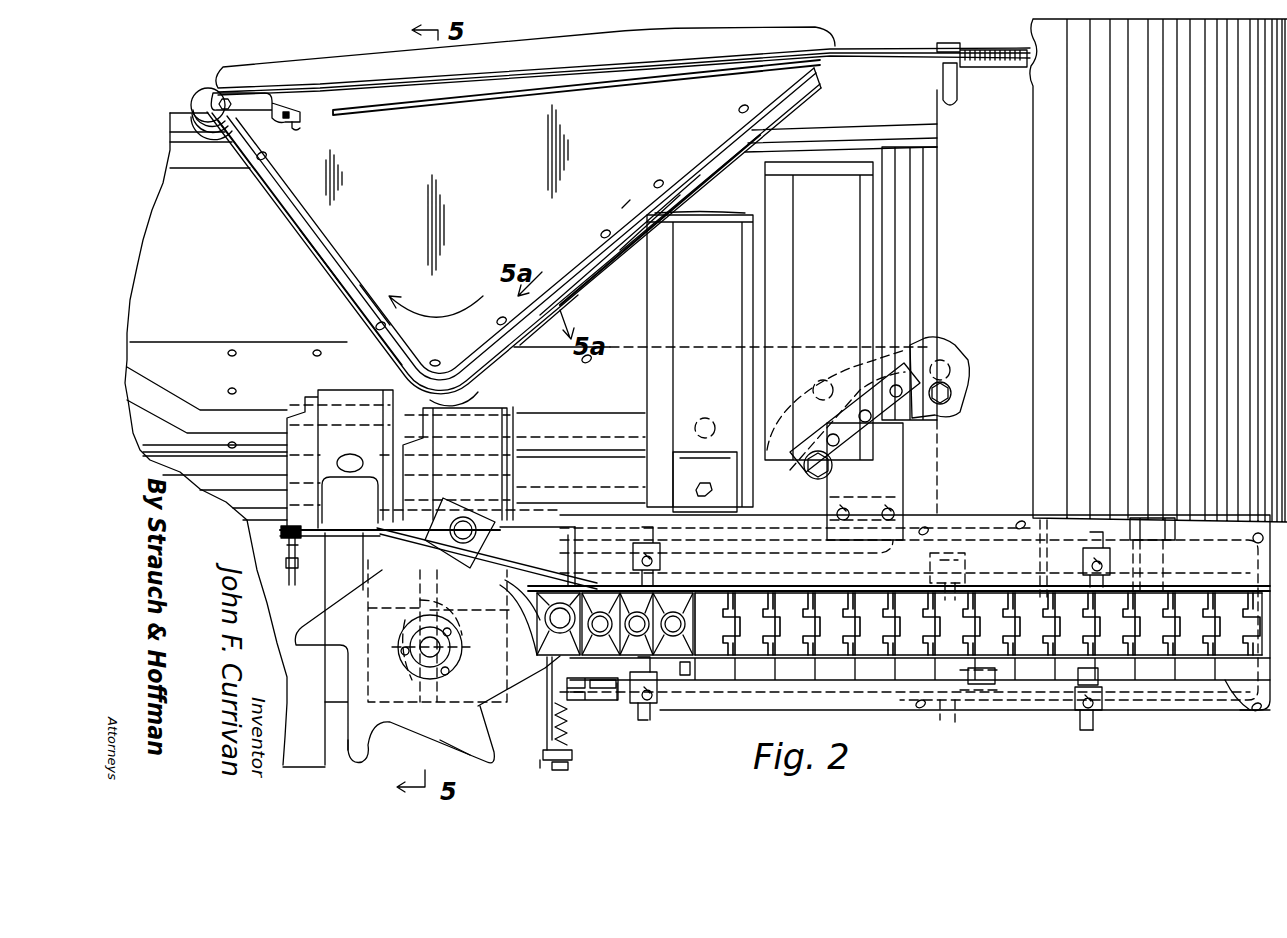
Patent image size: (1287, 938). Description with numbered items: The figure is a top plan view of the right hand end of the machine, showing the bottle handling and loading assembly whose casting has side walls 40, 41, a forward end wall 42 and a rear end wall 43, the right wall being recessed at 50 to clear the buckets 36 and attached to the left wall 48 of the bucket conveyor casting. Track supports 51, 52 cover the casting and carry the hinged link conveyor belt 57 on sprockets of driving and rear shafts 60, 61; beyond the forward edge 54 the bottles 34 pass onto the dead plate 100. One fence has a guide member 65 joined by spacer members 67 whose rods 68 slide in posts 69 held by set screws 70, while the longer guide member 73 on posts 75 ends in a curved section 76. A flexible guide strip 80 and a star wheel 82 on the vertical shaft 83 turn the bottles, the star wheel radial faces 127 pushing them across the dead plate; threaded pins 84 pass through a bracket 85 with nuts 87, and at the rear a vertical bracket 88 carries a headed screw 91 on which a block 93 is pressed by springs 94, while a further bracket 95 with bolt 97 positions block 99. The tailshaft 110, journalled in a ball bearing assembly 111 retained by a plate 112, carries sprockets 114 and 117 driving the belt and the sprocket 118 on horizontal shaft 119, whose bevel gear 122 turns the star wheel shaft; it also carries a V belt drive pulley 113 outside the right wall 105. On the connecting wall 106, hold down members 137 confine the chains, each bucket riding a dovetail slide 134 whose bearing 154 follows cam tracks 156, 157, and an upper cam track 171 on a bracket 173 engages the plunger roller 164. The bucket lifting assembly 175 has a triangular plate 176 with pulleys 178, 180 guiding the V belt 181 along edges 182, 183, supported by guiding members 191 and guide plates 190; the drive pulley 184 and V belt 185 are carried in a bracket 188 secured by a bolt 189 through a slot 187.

The bottles 34 is at (577, 558).
The buckets 36 is at (332, 392).
The left side wall 40 is at (1012, 710).
The right side wall 41 is at (1010, 520).
The forward end wall 42 is at (375, 615).
The rear end wall 43 is at (1262, 615).
The left wall 48 is at (276, 490).
The recess 50 is at (745, 572).
The conveyor track support 51 is at (1222, 712).
The conveyor track support 52 is at (1203, 572).
The forward edge 54 is at (512, 515).
The hinged link conveyor belt 57 is at (1040, 600).
The driving shaft 60 is at (498, 618).
The rear shaft 61 is at (1160, 553).
The guide member 65 is at (1247, 708).
The spacer members 67 is at (655, 665).
The rod 68 is at (641, 722).
The post 69 is at (652, 710).
The set screws 70 is at (660, 692).
The guide member 73 is at (1234, 595).
The posts 75 is at (662, 556).
The curved sections 76 is at (565, 527).
The guide strip 80 is at (336, 555).
The star wheel 82 is at (440, 735).
The vertical shaft 83 is at (442, 650).
The threaded pins 84 is at (296, 568).
The bracket 85 is at (288, 566).
The nuts 87 is at (282, 532).
The vertical bracket 88 is at (568, 724).
The headed screw 91 is at (570, 768).
The vertical block 93 is at (545, 760).
The springs 94 is at (545, 738).
The vertical bracket 95 is at (583, 696).
The bolt 97 is at (617, 700).
The block 99 is at (528, 695).
The dead plate 100 is at (325, 676).
The right wall 105 is at (860, 126).
The upper horizontal connecting wall 106 is at (188, 290).
The tailshaft 110 is at (942, 76).
The ball bearing assembly 111 is at (975, 712).
The plate 112 is at (955, 712).
The V belt drive pulley 113 is at (1010, 52).
The sprocket 114 is at (985, 690).
The sprocket 117 is at (966, 568).
The sprocket 118 is at (332, 533).
The horizontal shaft 119 is at (425, 600).
The bevel gear 122 is at (455, 622).
The radial faces 127 is at (368, 755).
The dovetail slide 134 is at (712, 215).
The hold down members 137 is at (620, 481).
The ball bearing assembly 154 is at (952, 372).
The cam track 156 is at (180, 348).
The cam track 157 is at (150, 418).
The roller 164 is at (952, 394).
The upper cam track 171 is at (940, 345).
The bracket 173 is at (905, 473).
The bucket lifting assembly 175 is at (266, 259).
The triangular plate 176 is at (520, 226).
The V belt pulley 178 is at (470, 375).
The V belt pulley 180 is at (830, 46).
The V belt 181 is at (318, 282).
The rear inclined edge 182 is at (645, 200).
The forward inclined edge 183 is at (312, 252).
The drive pulley 184 is at (210, 90).
The V belt 185 is at (428, 114).
The slot 187 is at (298, 128).
The bracket 188 is at (245, 98).
The bolt 189 is at (286, 112).
The guide plate 190 is at (676, 172).
The supporting and guiding members 191 is at (640, 190).